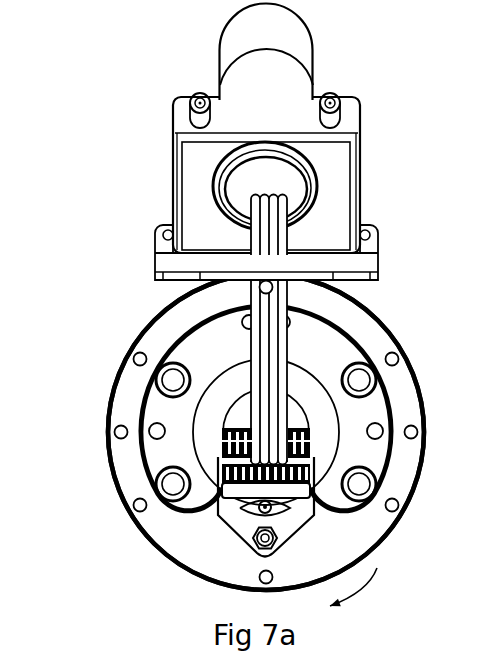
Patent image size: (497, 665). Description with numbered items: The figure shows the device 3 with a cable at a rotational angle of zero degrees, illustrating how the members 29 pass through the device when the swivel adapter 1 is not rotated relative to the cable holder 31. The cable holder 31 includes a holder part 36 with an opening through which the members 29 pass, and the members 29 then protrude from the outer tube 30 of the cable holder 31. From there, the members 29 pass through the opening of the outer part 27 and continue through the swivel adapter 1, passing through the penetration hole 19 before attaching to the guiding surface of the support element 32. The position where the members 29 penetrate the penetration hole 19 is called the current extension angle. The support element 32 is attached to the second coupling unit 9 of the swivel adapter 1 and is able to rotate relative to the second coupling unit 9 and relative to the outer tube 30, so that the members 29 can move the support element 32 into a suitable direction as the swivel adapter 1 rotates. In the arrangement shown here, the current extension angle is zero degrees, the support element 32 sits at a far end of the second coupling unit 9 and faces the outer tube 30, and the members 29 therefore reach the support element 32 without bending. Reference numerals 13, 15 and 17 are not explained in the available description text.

The swivel adapter 1 is at (158, 331).
The device 3 is at (100, 357).
The second coupling unit 9 is at (150, 520).
The clamp block 13 is at (344, 447).
The hub 15 is at (243, 407).
The pin 17 is at (246, 330).
The penetration hole 19 is at (357, 410).
The outer part 27 is at (392, 540).
The members 29 is at (279, 290).
The outer tube 30 is at (288, 77).
The cable holder 31 is at (369, 253).
The support element 32 is at (212, 518).
The holder part 36 is at (361, 168).